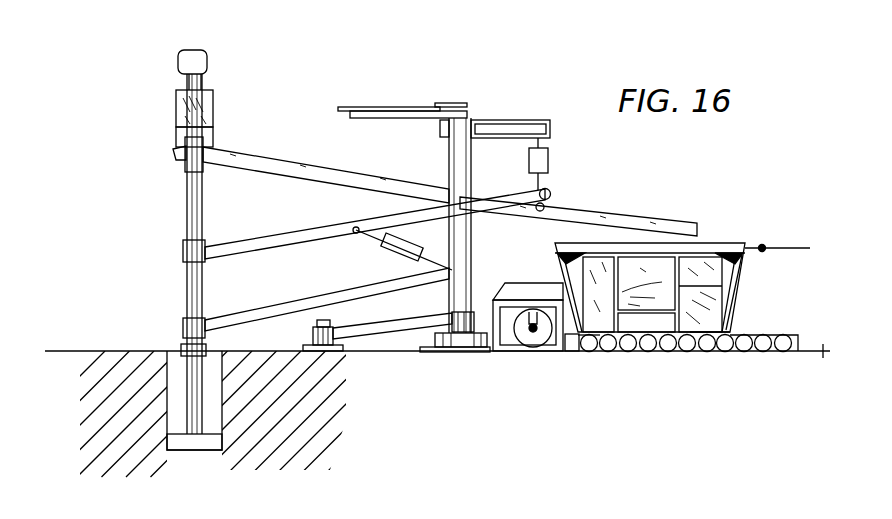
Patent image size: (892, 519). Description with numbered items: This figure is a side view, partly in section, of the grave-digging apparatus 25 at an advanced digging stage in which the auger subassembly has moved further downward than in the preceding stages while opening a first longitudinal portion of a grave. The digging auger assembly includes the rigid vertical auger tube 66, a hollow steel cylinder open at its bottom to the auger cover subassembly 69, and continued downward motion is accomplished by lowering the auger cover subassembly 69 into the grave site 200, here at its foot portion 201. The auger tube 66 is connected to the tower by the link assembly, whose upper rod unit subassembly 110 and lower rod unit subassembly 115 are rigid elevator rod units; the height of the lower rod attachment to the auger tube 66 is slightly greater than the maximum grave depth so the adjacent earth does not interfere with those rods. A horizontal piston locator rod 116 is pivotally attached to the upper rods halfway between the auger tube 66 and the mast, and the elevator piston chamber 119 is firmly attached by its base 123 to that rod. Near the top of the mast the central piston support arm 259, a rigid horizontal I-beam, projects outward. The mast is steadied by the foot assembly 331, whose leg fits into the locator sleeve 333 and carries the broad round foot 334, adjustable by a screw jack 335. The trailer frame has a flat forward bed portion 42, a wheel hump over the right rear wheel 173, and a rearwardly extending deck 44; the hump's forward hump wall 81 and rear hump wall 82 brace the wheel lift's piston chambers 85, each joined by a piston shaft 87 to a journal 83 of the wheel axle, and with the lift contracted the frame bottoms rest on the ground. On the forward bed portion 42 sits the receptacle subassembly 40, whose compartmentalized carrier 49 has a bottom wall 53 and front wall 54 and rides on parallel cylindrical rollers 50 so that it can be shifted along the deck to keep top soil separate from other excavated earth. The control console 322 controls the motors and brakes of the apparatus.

The apparatus 25 is at (584, 186).
The receptacle subassembly 40 is at (750, 239).
The forward bed portion 42 is at (703, 352).
The rearwardly extending deck 44 is at (462, 349).
The compartmentalized carrier 49 is at (746, 316).
The rollers 50 is at (603, 344).
The bottom wall 53 is at (707, 335).
The front wall 54 is at (690, 287).
The auger tube 66 is at (192, 212).
The auger cover subassembly 69 is at (212, 441).
The forward hump wall 81 is at (590, 338).
The rear hump wall 82 is at (518, 328).
The journal 83 is at (568, 340).
The piston chamber 85 is at (532, 335).
The piston shaft 87 is at (538, 333).
The upper rod unit subassembly 110 is at (296, 240).
The lower rod unit subassembly 115 is at (335, 290).
The piston locator rod 116 is at (355, 228).
The piston chamber 119 is at (395, 243).
The base 123 is at (378, 239).
The right rear wheel 173 is at (516, 318).
The site 200 is at (180, 361).
The foot portion 201 is at (178, 414).
The central piston support arm 259 is at (520, 120).
The control console 322 is at (532, 282).
The foot assembly 331 is at (397, 333).
The locator sleeve 333 is at (454, 318).
The foot 334 is at (324, 350).
The screw jack 335 is at (312, 330).